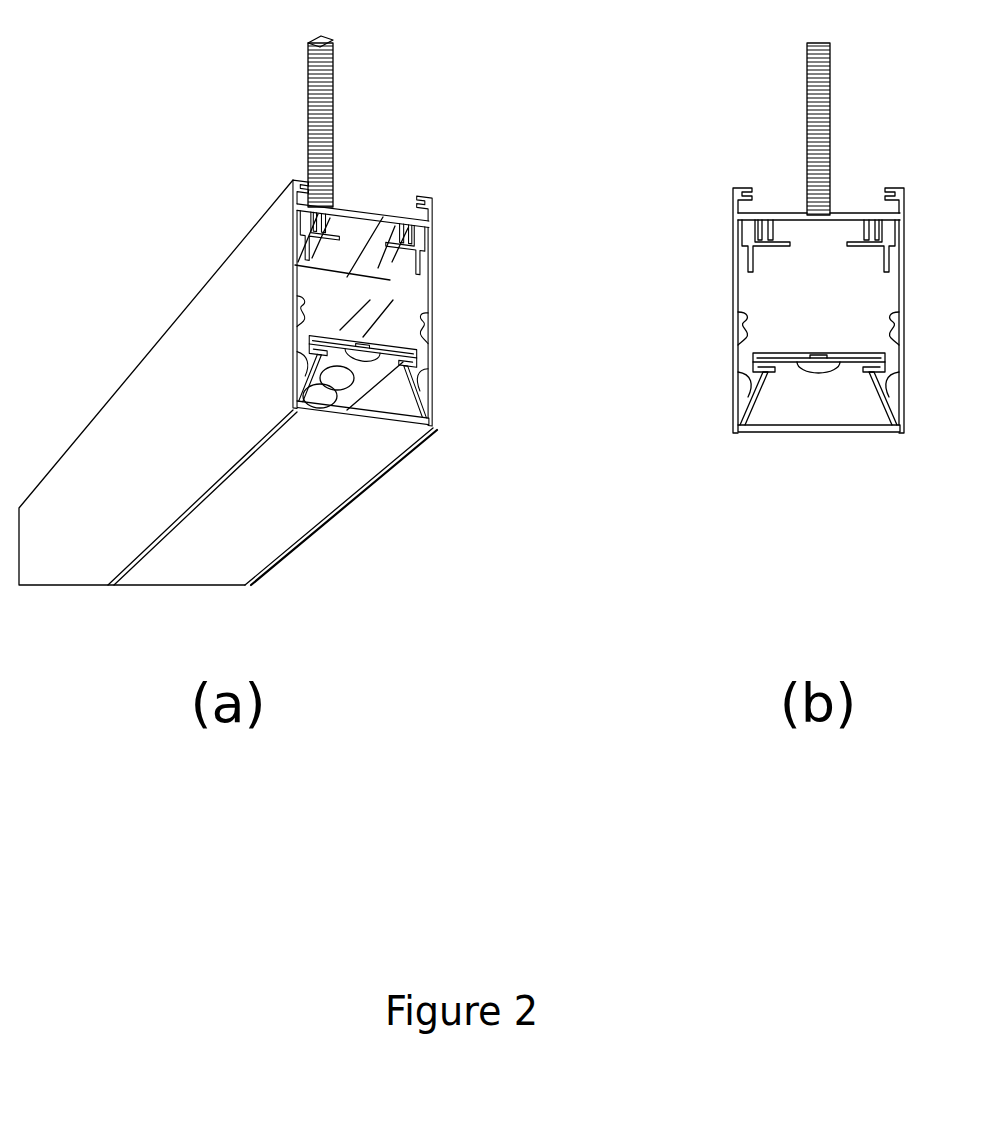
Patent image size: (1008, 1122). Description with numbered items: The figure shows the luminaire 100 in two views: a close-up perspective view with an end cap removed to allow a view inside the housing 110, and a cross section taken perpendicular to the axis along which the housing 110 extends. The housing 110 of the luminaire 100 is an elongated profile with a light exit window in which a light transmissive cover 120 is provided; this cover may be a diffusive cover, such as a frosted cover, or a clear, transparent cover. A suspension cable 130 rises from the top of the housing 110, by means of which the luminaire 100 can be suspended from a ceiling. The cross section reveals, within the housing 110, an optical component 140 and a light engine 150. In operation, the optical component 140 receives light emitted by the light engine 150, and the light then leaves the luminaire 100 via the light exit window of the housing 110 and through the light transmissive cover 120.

The luminaire 100 is at (461, 326).
The housing 110 is at (140, 378).
The light transmissive cover 120 is at (187, 575).
The suspension cables 130 is at (308, 98).
The optical component 140 is at (858, 368).
The light engine 150 is at (785, 352).